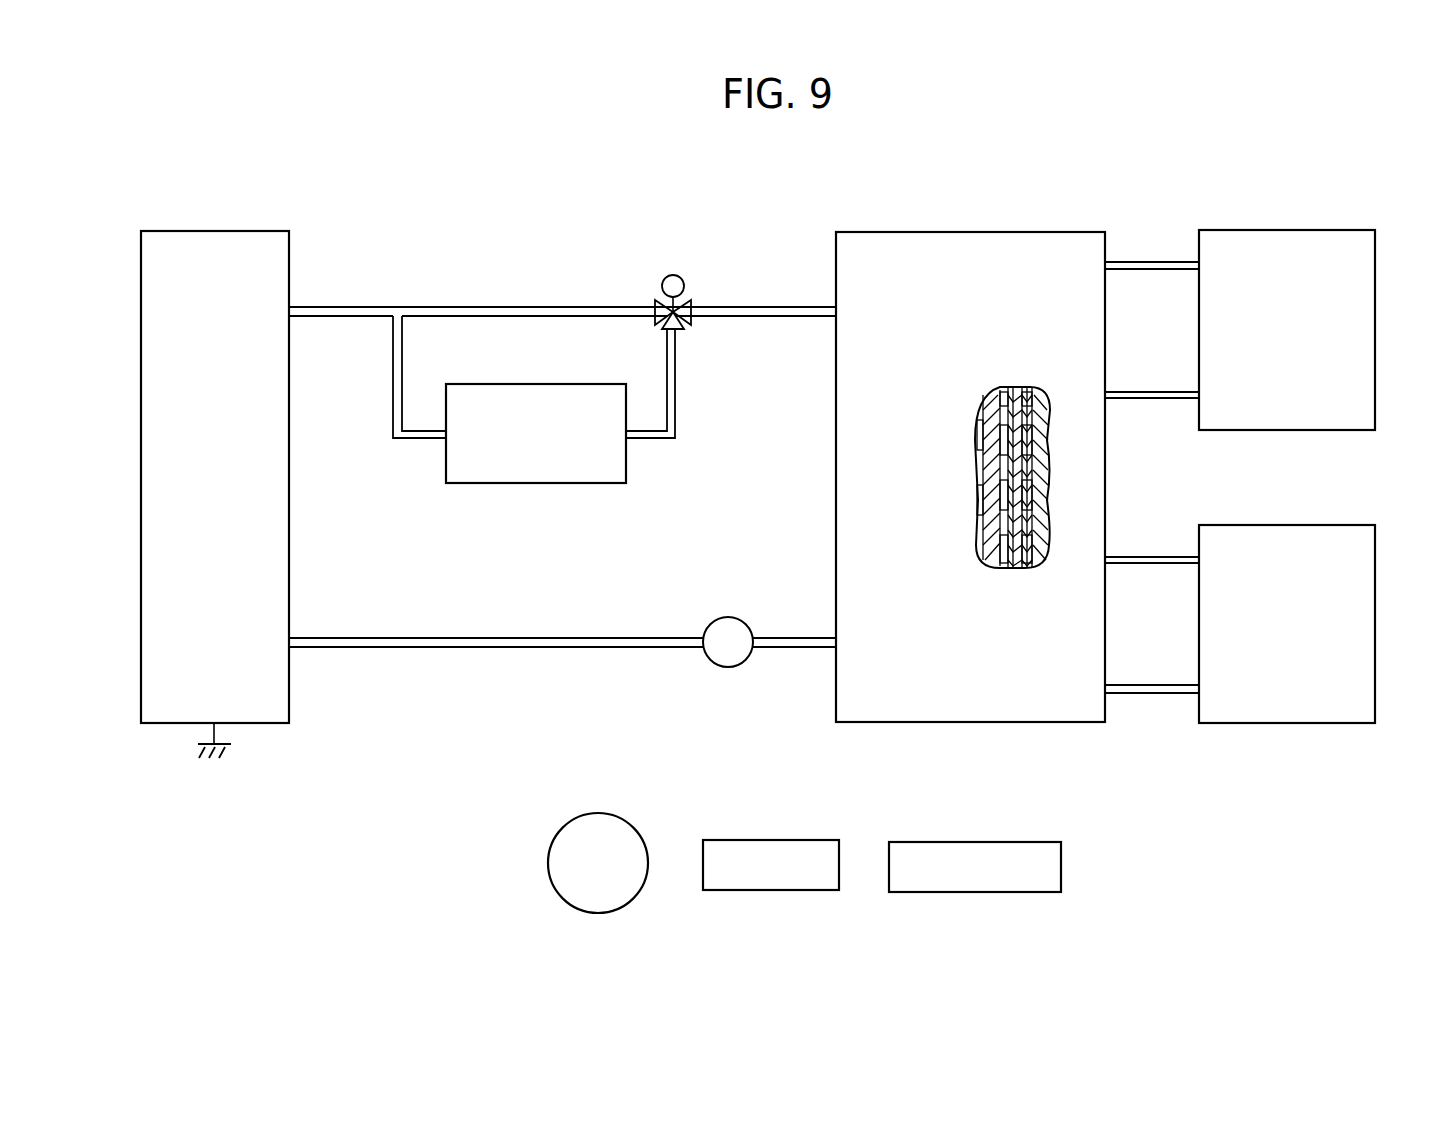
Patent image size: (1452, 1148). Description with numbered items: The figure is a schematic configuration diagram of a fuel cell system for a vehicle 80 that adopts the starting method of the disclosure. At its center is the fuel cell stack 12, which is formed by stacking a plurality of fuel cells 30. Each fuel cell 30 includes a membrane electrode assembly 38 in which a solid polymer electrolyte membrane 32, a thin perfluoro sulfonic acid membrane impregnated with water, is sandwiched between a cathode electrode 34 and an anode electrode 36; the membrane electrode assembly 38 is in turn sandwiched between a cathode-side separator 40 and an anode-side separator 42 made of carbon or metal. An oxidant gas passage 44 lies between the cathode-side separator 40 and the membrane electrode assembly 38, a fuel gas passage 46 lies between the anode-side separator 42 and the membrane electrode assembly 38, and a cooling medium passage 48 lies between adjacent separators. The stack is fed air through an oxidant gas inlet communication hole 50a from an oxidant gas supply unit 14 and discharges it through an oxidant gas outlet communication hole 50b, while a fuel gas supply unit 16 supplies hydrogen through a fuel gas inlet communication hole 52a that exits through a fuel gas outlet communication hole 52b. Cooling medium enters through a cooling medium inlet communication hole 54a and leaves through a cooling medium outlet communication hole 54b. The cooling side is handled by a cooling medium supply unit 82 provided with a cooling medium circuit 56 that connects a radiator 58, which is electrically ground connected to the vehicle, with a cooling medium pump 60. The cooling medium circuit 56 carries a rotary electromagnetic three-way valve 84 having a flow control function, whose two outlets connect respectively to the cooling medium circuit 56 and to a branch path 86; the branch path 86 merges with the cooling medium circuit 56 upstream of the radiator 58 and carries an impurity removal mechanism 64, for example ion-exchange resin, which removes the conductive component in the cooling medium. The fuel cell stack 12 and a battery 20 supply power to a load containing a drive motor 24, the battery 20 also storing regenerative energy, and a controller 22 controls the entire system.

The fuel cell system for a vehicle 80 is at (781, 155).
The cooling medium supply unit 82 is at (745, 250).
The rotary electromagnetic three-way valve 84 is at (662, 280).
The radiator 58 is at (278, 258).
The impurity removal mechanism 64 is at (582, 384).
The branch path 86 is at (676, 406).
The cooling medium circuit 56 is at (778, 318).
The cooling medium inlet communication hole 54a is at (835, 306).
The cooling medium outlet communication hole 54b is at (835, 636).
The cooling medium pump 60 is at (726, 667).
The fuel cell stack 12 is at (1022, 232).
The fuel cell 30 is at (1065, 303).
The cathode-side separator 40 is at (988, 386).
The membrane electrode assembly 38 is at (1015, 386).
The anode-side separator 42 is at (1043, 386).
The cooling medium passage 48 is at (982, 424).
The oxidant gas passage 44 is at (1000, 497).
The fuel gas passage 46 is at (1033, 423).
The cathode electrode 34 is at (1010, 573).
The solid polymer electrolyte membrane 32 is at (1020, 572).
The anode electrode 36 is at (1027, 573).
The oxidant gas inlet communication hole 50a is at (1107, 271).
The oxidant gas outlet communication hole 50b is at (1107, 392).
The fuel gas inlet communication hole 52a is at (1107, 557).
The fuel gas outlet communication hole 52b is at (1107, 685).
The oxidant gas supply unit 14 is at (1376, 248).
The fuel gas supply unit 16 is at (1376, 563).
The drive motor 24 is at (637, 828).
The battery 20 is at (817, 840).
The controller 22 is at (1010, 842).